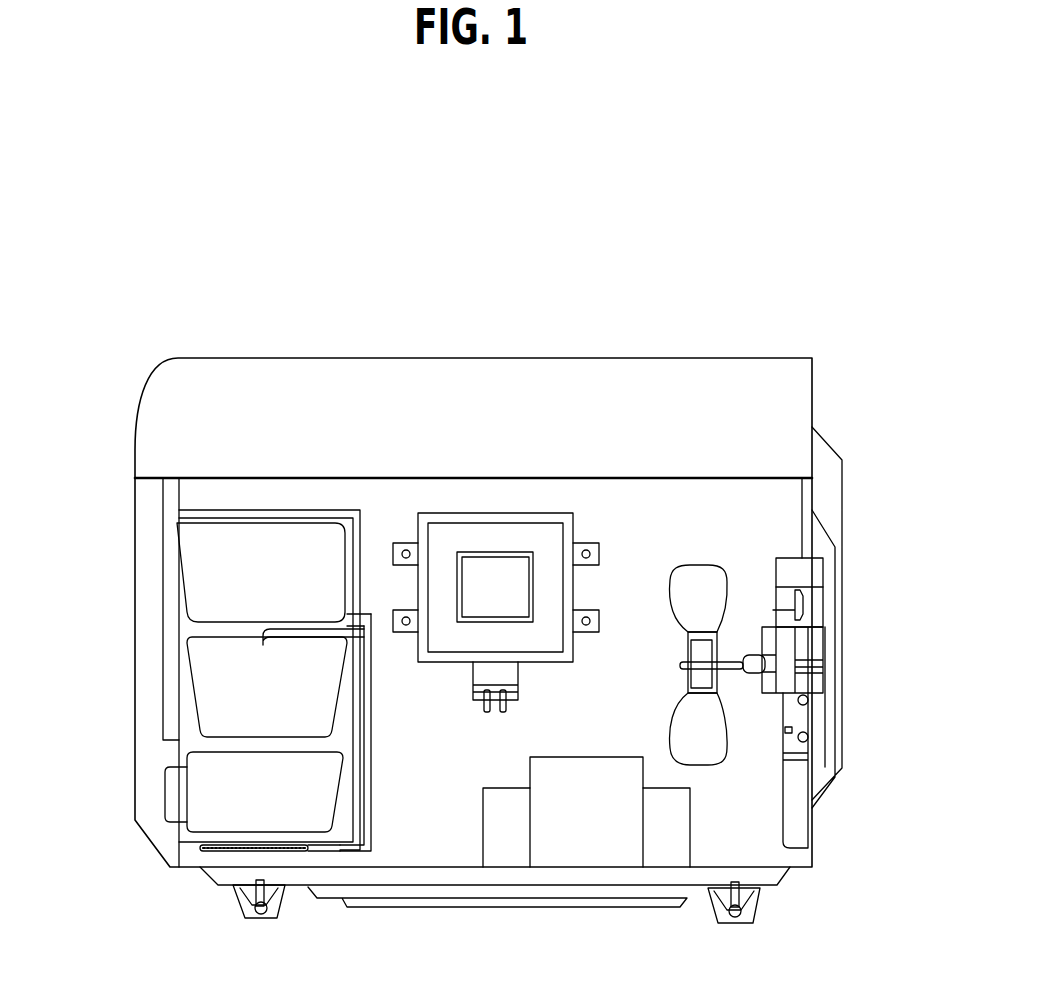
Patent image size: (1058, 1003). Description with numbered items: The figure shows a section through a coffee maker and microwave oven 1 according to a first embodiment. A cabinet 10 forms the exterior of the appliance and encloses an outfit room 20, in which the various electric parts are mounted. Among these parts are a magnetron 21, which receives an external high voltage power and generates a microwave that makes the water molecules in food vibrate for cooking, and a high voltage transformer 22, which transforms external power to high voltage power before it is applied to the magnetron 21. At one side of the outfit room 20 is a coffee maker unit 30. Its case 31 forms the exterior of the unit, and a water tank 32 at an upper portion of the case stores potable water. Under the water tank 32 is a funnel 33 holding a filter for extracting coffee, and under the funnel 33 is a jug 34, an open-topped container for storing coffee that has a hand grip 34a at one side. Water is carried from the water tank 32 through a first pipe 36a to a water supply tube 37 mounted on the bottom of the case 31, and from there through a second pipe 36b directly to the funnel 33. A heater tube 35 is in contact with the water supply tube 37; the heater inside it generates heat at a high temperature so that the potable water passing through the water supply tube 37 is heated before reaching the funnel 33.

The refrigerator 1 is at (474, 191).
The cabinet 10 is at (816, 392).
The outfit room 20 is at (658, 536).
The magnetron 21 is at (502, 577).
The high voltage transformer 22 is at (582, 820).
The coffee maker unit 30 is at (178, 592).
The case 31 is at (282, 513).
The water tank 32 is at (208, 563).
The funnel 33 is at (207, 678).
The jug 34 is at (208, 780).
The hand grip 34a is at (163, 802).
The heater tube 35 is at (200, 855).
The first pipe 36a is at (373, 611).
The second pipe 36b is at (372, 733).
The water supply tube 37 is at (322, 855).